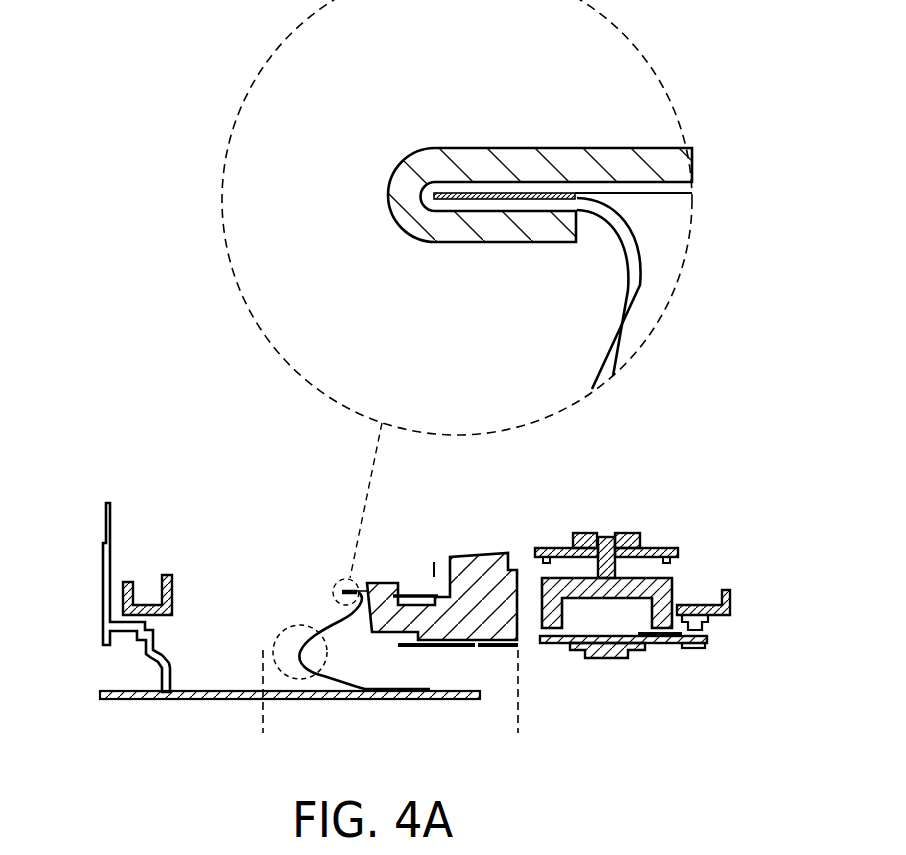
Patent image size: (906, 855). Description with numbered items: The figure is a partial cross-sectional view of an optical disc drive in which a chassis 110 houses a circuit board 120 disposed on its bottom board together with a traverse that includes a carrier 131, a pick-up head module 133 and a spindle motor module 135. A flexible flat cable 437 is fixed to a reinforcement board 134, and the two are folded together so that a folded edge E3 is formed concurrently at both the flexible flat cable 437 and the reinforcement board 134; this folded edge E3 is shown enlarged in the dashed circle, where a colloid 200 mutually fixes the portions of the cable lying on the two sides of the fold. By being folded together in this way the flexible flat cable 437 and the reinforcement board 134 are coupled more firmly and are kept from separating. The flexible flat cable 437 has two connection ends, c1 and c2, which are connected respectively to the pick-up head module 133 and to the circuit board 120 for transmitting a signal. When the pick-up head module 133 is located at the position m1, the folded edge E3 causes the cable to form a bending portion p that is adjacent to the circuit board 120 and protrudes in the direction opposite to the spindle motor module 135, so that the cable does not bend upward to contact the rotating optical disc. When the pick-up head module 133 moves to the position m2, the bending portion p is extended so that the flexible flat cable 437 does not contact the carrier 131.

The chassis 110 is at (106, 502).
The circuit board 120 is at (198, 700).
The carrier 131 is at (130, 581).
The pick-up head module 133 is at (497, 553).
The reinforcement board 134 is at (523, 149).
The spindle motor module 135 is at (660, 510).
The colloid 200 is at (494, 200).
The flexible flat cable 437 is at (630, 306).
The folded edge E3 is at (382, 160).
The connection end c1 is at (382, 583).
The connection end c2 is at (428, 689).
The bending portion p is at (275, 630).
The position m1 is at (521, 704).
The position m2 is at (270, 704).